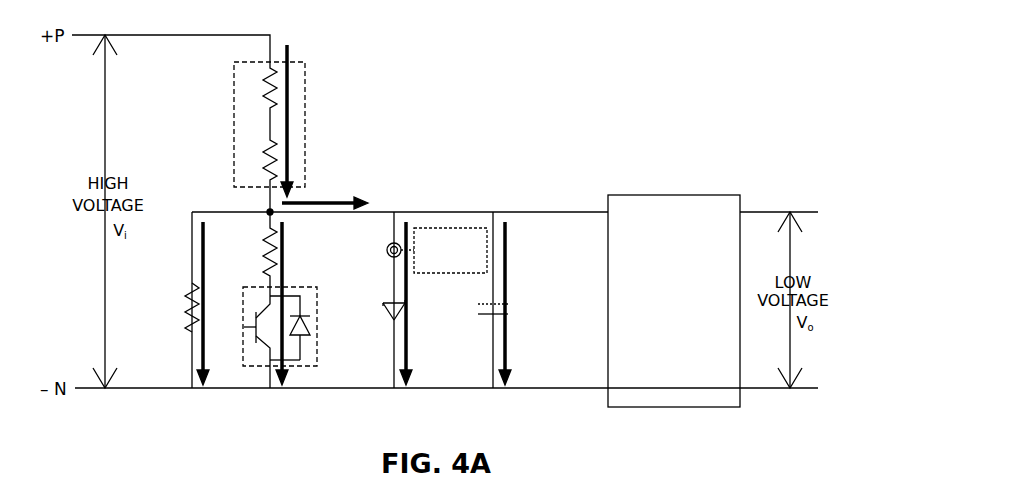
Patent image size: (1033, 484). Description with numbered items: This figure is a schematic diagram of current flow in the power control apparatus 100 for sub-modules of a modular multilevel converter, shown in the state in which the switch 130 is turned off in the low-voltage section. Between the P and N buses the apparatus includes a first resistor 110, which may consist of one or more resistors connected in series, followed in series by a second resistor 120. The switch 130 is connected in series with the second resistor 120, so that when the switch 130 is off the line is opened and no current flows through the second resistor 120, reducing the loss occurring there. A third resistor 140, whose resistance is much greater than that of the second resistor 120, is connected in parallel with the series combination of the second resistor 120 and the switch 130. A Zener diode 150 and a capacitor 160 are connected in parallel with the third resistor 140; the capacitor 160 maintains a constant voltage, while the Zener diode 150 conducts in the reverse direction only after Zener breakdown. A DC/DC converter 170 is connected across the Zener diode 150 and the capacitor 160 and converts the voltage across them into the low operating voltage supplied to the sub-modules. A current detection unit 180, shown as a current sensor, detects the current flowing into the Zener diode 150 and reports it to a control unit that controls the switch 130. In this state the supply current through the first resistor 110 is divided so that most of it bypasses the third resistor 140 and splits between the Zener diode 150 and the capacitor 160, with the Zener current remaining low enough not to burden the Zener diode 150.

The power control apparatus 100 is at (444, 72).
The first resistor R4 110 is at (305, 90).
The second resistor R5 120 is at (287, 239).
The switch 130 is at (317, 314).
The third resistor R6 140 is at (186, 304).
The Zener diode 150 is at (408, 303).
The capacitor 160 is at (510, 303).
The DC/DC converter 170 is at (675, 195).
The current detection unit 180 is at (450, 228).